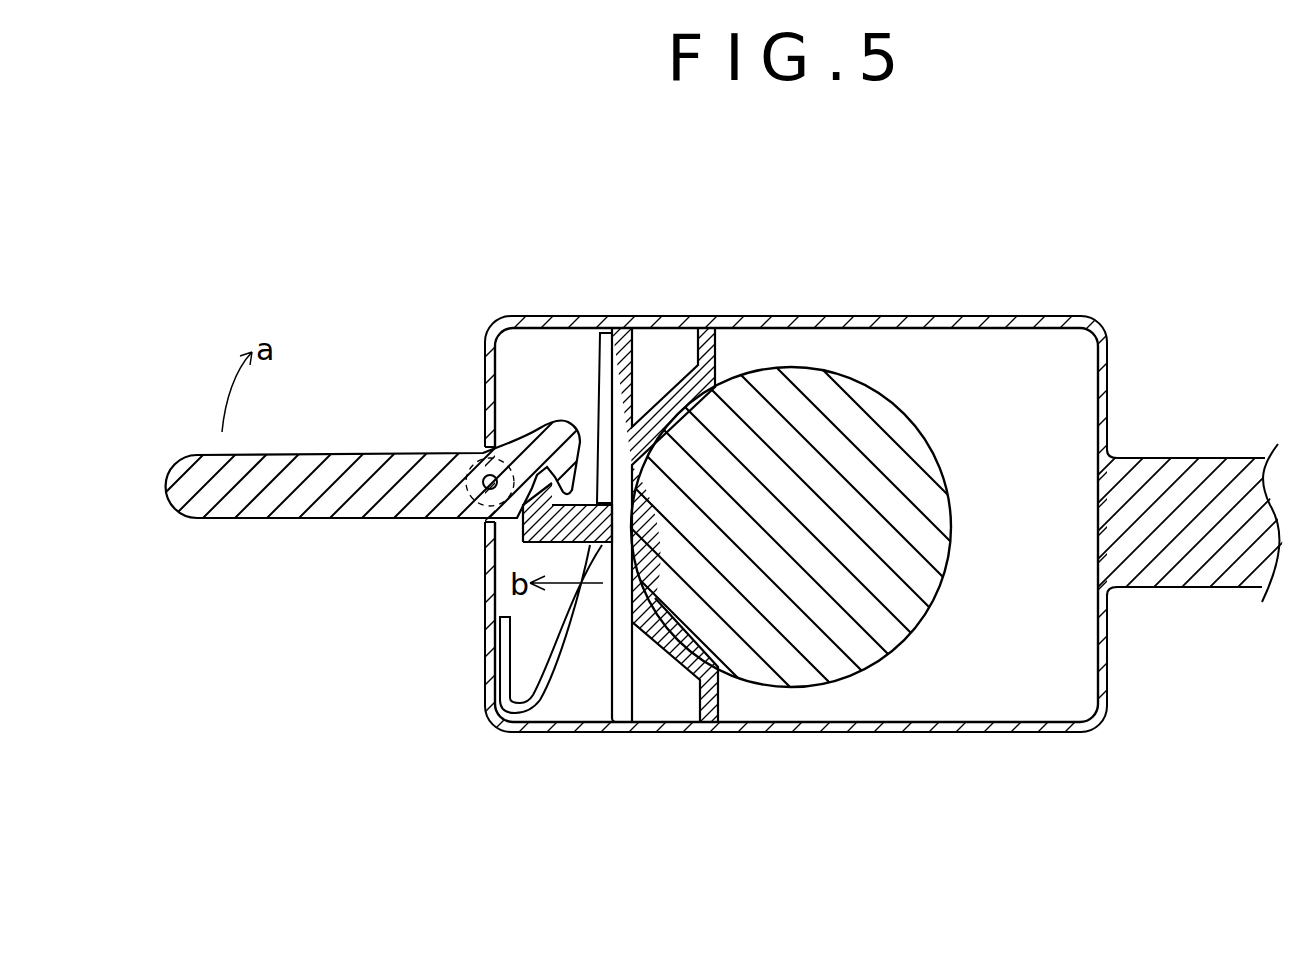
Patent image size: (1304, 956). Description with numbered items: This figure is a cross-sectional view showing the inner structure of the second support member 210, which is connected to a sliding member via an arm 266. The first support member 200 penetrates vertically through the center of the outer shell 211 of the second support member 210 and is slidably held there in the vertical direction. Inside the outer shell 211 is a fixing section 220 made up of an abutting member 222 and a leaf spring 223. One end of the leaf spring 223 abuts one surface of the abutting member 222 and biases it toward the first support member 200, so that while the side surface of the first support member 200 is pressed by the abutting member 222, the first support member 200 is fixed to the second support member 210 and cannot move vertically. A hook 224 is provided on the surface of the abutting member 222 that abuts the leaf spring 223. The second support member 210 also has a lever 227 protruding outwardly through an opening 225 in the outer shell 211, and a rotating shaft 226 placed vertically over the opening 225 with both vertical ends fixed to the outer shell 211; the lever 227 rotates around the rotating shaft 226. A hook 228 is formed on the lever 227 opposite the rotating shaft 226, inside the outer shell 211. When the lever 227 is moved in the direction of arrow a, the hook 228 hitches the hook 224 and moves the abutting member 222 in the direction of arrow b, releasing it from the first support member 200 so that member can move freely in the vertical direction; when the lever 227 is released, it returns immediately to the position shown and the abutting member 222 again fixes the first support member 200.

The first support member 200 is at (782, 385).
The second support member 210 is at (906, 316).
The outer shell 211 is at (1004, 320).
The fixing section 220 is at (622, 603).
The abutting member 222 is at (684, 663).
The leaf spring 223 is at (567, 660).
The hook 224 is at (522, 518).
The opening 225 is at (500, 498).
The rotating shaft 226 is at (485, 470).
The lever 227 is at (328, 472).
The hook 228 is at (566, 470).
The arm 266 is at (1187, 485).